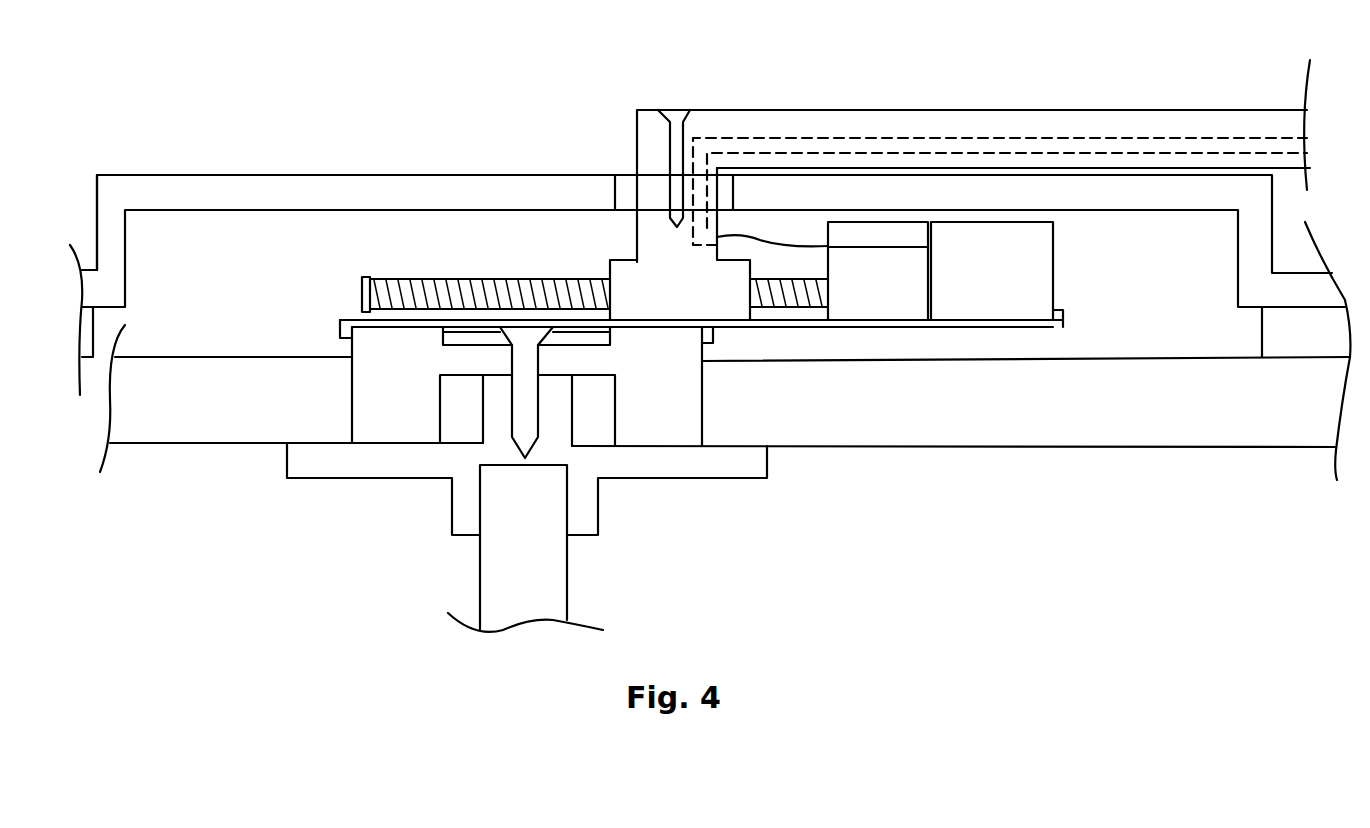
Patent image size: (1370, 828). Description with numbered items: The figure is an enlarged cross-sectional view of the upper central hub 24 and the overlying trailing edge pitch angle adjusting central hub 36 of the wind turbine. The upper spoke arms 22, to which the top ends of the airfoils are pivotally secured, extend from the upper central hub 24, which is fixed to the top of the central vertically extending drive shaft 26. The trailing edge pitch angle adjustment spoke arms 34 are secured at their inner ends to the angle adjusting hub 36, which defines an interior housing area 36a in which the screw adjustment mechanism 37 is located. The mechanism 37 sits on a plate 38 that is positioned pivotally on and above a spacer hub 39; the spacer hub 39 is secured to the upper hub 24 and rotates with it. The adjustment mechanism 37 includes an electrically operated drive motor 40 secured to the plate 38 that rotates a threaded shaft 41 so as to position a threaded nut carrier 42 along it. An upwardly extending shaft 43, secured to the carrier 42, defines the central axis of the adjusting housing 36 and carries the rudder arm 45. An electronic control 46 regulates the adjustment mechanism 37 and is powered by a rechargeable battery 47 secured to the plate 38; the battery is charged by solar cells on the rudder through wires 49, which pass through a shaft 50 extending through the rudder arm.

The upper spoke arm 22 is at (212, 432).
The upper central hub 24 is at (400, 470).
The drive shaft 26 is at (498, 577).
The trailing edge pitch angle adjustment spoke arm 34 is at (95, 318).
The trailing edge pitch angle adjusting central hub 36 is at (406, 192).
The interior housing area 36a is at (333, 232).
The screw adjustment mechanism 37 is at (548, 252).
The plate 38 is at (335, 322).
The spacer hub 39 is at (645, 428).
The drive motor 40 is at (940, 278).
The threaded shaft 41 is at (487, 282).
The threaded nut carrier 42 is at (622, 262).
The upwardly extending shaft 43 is at (655, 197).
The rudder arm 45 is at (864, 118).
The electronic control 46 is at (903, 232).
The rechargeable battery 47 is at (958, 235).
The wires 49 is at (773, 245).
The shaft 50 is at (1040, 135).